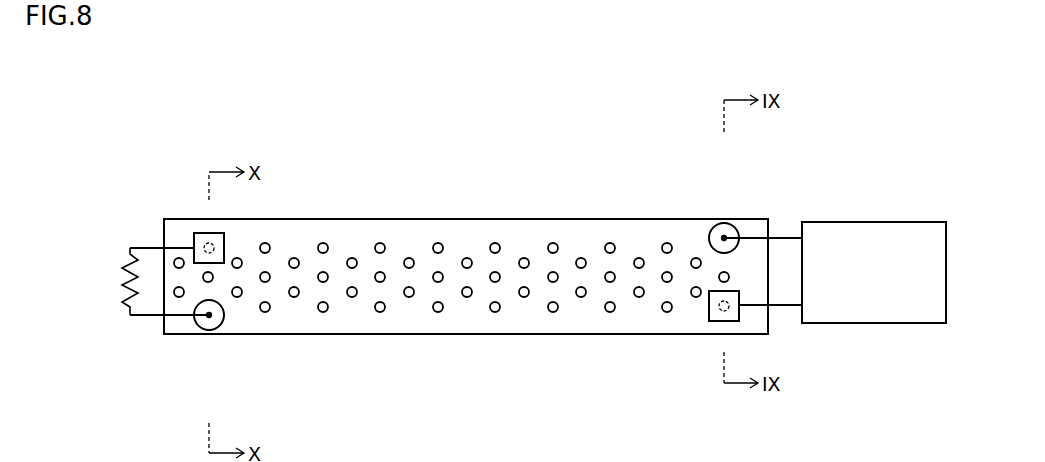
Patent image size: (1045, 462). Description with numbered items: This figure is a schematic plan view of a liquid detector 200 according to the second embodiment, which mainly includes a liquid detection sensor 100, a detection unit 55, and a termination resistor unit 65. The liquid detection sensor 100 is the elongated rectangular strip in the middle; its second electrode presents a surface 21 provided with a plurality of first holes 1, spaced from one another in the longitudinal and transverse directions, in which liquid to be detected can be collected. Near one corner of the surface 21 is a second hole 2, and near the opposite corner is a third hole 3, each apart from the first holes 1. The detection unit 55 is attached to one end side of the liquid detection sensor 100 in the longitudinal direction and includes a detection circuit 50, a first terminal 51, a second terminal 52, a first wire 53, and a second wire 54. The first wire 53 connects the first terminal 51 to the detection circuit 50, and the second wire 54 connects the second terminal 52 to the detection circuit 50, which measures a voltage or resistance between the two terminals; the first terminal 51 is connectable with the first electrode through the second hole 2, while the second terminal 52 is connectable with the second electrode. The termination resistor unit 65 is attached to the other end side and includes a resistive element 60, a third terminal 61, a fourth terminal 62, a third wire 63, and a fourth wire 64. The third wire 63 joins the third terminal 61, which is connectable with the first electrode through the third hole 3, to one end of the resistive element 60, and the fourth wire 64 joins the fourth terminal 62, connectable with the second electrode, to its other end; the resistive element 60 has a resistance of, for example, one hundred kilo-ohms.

The first hole 1 is at (205, 240).
The second hole 2 is at (697, 213).
The third hole 3 is at (242, 279).
The surface 21 is at (574, 237).
The detection circuit 50 is at (857, 222).
The first terminal 51 is at (722, 238).
The second terminal 52 is at (730, 292).
The first wire 53 is at (780, 238).
The second wire 54 is at (781, 305).
The detection unit 55 is at (872, 171).
The resistive element 60 is at (122, 281).
The third terminal 61 is at (206, 322).
The fourth terminal 62 is at (192, 236).
The third wire 63 is at (146, 315).
The fourth wire 64 is at (160, 244).
The termination resistor unit 65 is at (217, 379).
The liquid detection sensor 100 is at (680, 171).
The liquid detector 200 is at (822, 82).